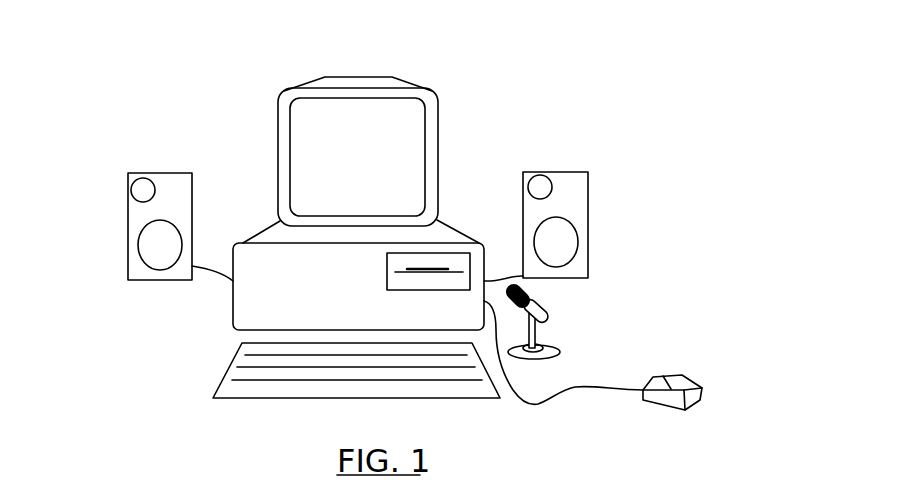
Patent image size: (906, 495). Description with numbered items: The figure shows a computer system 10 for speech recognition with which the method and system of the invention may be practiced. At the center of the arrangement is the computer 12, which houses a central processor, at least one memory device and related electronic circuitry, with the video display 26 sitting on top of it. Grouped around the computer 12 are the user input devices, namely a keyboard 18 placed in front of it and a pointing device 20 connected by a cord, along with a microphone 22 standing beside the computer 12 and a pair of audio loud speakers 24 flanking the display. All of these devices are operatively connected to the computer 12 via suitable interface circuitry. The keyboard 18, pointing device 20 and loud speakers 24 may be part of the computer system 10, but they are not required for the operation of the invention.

The computer system 10 is at (586, 63).
The computer 12 is at (233, 307).
The keyboard 18 is at (222, 368).
The pointing device 20 is at (663, 375).
The microphone 22 is at (553, 344).
The audio loud speakers 24 is at (128, 204).
The video display 26 is at (278, 127).